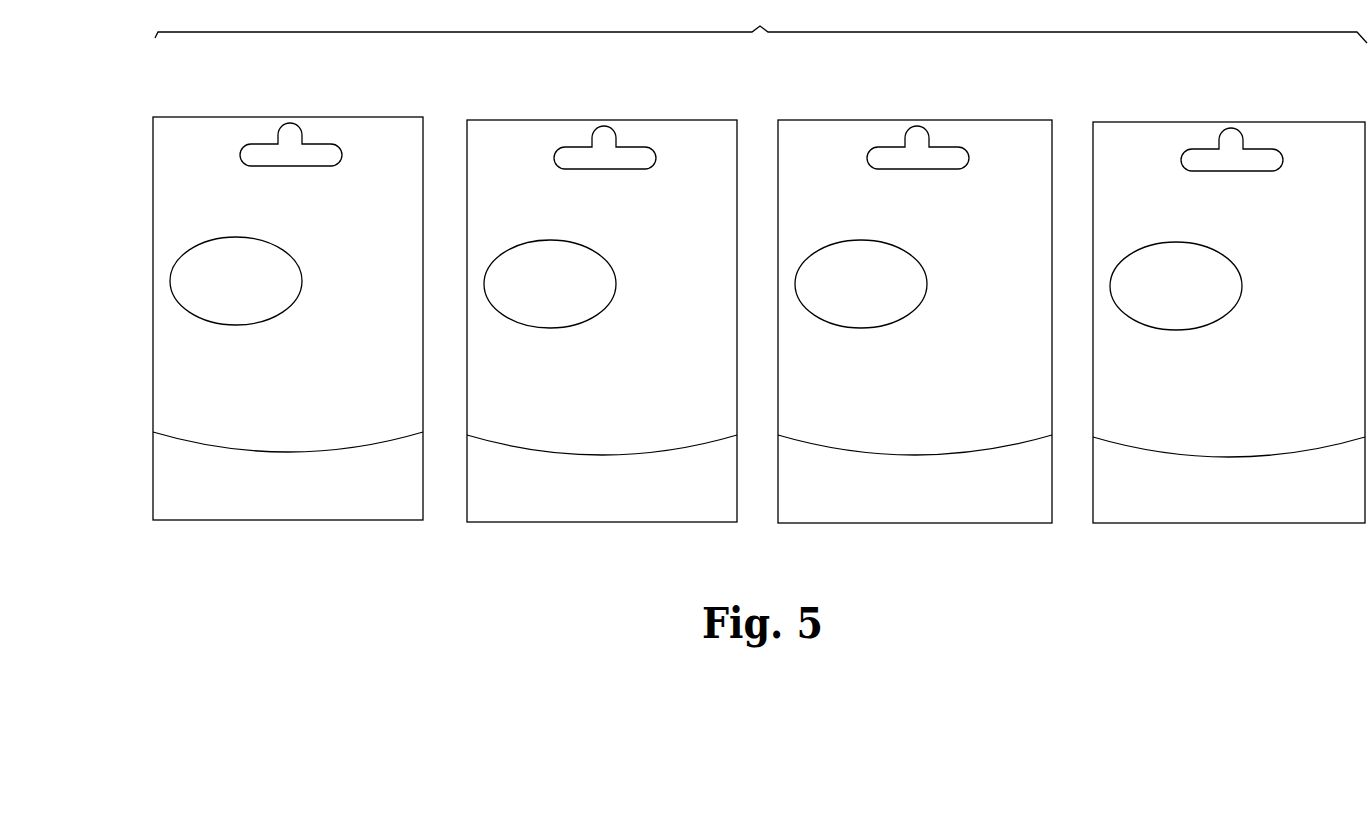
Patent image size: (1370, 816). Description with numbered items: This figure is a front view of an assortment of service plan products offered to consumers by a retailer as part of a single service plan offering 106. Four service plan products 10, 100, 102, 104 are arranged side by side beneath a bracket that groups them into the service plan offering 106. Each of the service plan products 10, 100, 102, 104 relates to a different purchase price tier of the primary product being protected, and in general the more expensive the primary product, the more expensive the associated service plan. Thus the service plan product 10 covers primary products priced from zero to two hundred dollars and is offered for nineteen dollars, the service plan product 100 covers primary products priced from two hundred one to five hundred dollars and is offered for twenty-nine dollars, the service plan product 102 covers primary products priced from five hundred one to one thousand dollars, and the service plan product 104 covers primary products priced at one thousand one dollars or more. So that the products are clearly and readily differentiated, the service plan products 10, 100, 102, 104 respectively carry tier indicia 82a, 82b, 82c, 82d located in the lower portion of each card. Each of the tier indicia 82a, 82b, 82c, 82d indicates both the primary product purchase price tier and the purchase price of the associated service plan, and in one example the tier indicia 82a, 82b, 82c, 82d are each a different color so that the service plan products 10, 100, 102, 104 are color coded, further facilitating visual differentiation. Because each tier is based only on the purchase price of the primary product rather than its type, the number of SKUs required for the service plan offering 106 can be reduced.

The service plan product 10 is at (258, 115).
The service plan product 100 is at (542, 118).
The service plan product 102 is at (847, 118).
The service plan product 104 is at (1184, 120).
The service plan offering 106 is at (761, 21).
The tier indicia 82a is at (305, 521).
The tier indicia 82b is at (612, 523).
The tier indicia 82c is at (917, 524).
The tier indicia 82d is at (1243, 524).